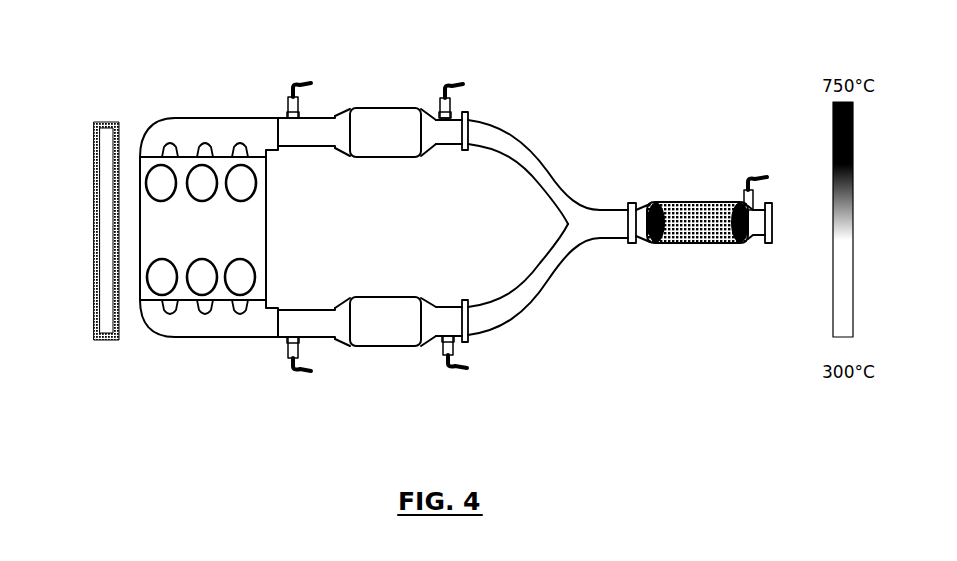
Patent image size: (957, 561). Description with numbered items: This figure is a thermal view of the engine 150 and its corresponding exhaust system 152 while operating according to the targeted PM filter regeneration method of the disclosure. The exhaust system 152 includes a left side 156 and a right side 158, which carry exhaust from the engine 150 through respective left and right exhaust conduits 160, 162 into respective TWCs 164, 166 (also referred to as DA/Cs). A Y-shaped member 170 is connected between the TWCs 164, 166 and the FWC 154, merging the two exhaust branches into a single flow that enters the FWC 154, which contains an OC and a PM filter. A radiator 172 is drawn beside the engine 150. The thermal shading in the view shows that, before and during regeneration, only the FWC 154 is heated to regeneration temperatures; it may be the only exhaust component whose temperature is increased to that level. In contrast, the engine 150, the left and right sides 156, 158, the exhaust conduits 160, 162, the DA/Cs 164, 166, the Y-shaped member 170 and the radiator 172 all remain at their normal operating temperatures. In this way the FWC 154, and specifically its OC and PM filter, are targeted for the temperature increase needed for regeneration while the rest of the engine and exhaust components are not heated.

The engine 150 is at (266, 227).
The exhaust system 152 is at (446, 227).
The FWC 154 is at (667, 200).
The left side 156 is at (198, 337).
The right side 158 is at (192, 118).
The left exhaust conduit 160 is at (317, 337).
The right exhaust conduit 162 is at (320, 118).
The TWC 164 is at (375, 297).
The TWC 166 is at (387, 108).
The Y-shaped member 170 is at (548, 279).
The radiator 172 is at (97, 122).